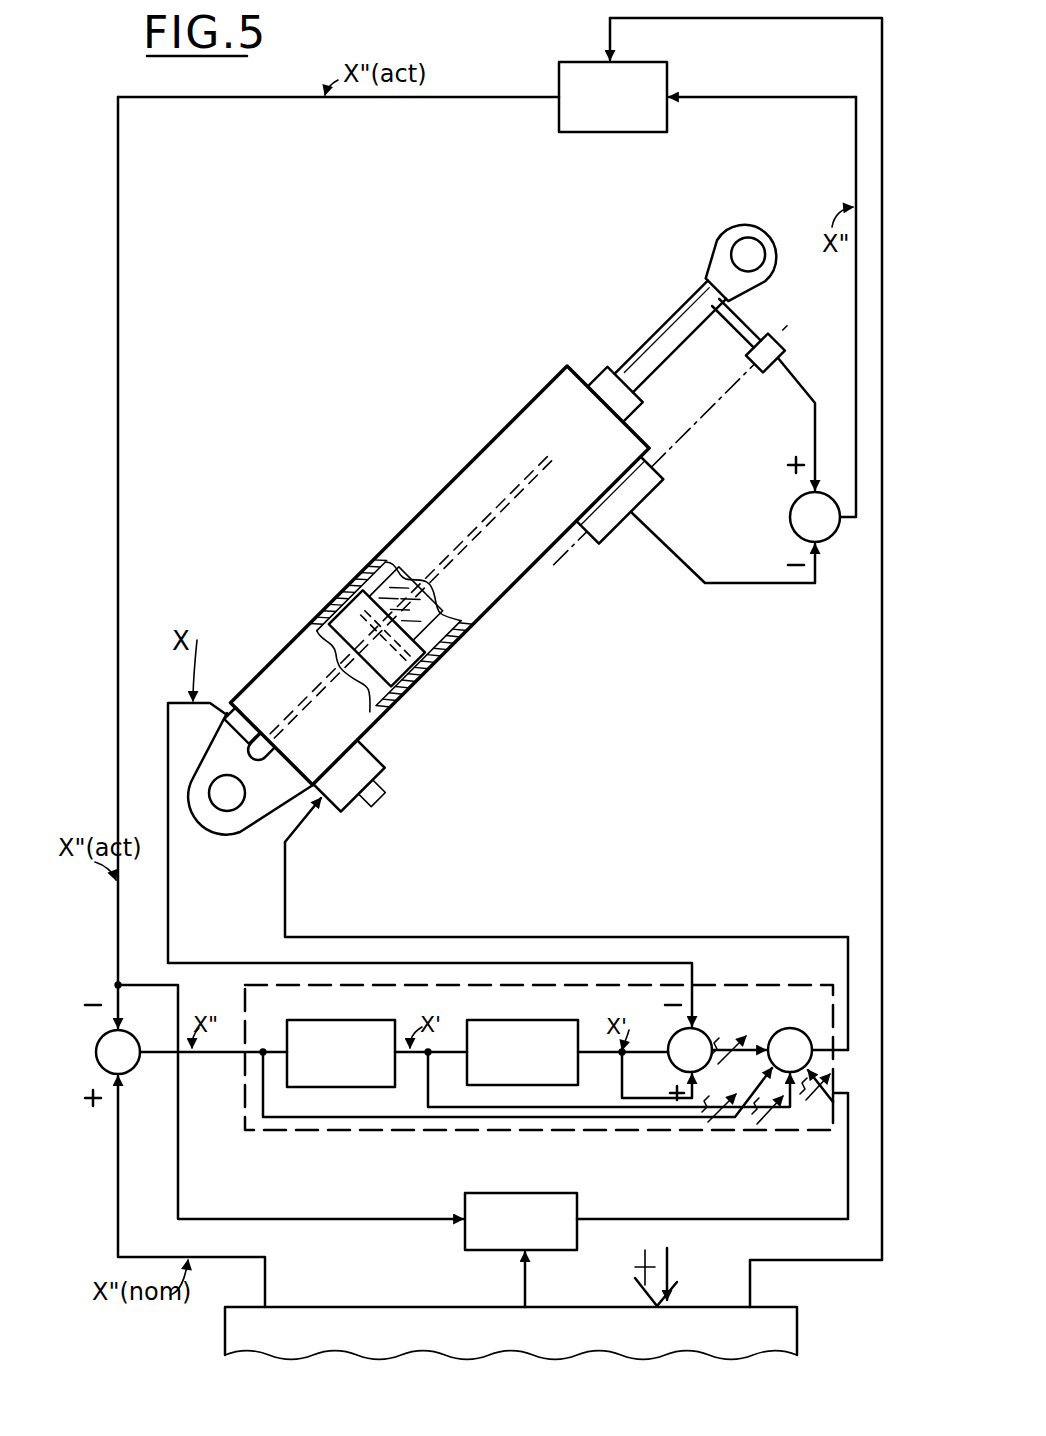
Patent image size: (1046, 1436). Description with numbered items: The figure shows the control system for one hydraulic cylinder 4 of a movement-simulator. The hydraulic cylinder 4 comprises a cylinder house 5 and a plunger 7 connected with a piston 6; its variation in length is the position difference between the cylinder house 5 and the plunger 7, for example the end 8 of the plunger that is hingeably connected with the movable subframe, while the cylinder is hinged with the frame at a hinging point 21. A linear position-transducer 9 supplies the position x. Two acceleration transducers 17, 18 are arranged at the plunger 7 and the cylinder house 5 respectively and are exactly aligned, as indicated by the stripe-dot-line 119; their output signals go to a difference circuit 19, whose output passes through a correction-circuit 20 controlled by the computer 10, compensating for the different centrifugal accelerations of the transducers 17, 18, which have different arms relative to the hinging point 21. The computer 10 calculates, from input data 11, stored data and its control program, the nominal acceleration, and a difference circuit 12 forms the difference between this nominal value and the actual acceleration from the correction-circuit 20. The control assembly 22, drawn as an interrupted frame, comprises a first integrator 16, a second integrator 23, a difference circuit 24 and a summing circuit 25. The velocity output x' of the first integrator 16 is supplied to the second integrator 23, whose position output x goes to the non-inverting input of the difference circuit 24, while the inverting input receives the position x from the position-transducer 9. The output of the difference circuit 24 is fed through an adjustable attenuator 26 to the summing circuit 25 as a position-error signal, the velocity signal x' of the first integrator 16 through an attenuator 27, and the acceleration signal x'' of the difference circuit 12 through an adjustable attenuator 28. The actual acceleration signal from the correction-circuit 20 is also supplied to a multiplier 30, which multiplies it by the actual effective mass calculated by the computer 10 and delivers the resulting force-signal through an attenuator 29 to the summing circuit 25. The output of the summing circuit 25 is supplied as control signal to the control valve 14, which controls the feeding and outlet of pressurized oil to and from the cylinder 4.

The hydraulic cylinder 4 is at (381, 585).
The cylinder house 5 is at (479, 479).
The piston 6 is at (352, 594).
The plunger 7 is at (668, 340).
The end of plunger 8 is at (730, 247).
The linear position-transducer 9 is at (328, 624).
The computer 10 is at (726, 1322).
The input data 11 is at (641, 1277).
The difference circuit 12 is at (101, 1055).
The control valve 14 is at (362, 758).
The first integrator 16 is at (352, 1025).
The acceleration transducer 17 is at (783, 352).
The acceleration transducer 18 is at (634, 520).
The difference circuit 19 is at (808, 520).
The correction-circuit 20 is at (648, 111).
The hinging point 21 is at (229, 815).
The control assembly 22 is at (786, 986).
The second integrator 23 is at (540, 1025).
The difference circuit 24 is at (690, 1050).
The summing circuit 25 is at (808, 1050).
The adjustable attenuator 26 is at (726, 1036).
The attenuator 27 is at (736, 1126).
The adjustable attenuator 28 is at (780, 1126).
The attenuator 29 is at (818, 1126).
The multiplier 30 is at (559, 1195).
The sensor axis 119 is at (693, 448).